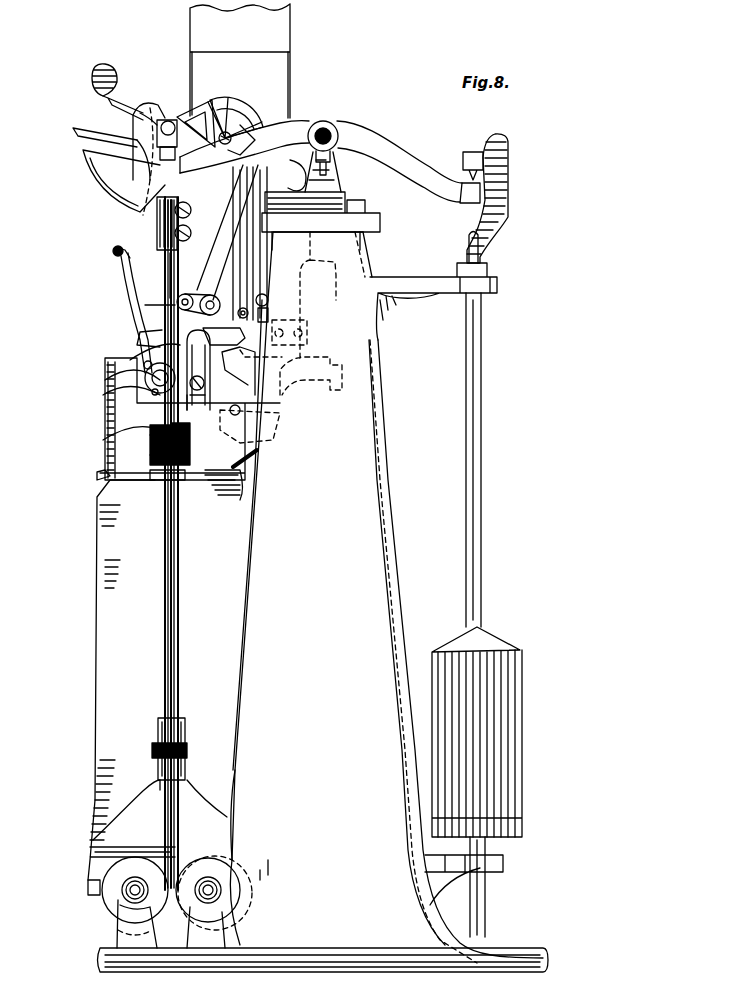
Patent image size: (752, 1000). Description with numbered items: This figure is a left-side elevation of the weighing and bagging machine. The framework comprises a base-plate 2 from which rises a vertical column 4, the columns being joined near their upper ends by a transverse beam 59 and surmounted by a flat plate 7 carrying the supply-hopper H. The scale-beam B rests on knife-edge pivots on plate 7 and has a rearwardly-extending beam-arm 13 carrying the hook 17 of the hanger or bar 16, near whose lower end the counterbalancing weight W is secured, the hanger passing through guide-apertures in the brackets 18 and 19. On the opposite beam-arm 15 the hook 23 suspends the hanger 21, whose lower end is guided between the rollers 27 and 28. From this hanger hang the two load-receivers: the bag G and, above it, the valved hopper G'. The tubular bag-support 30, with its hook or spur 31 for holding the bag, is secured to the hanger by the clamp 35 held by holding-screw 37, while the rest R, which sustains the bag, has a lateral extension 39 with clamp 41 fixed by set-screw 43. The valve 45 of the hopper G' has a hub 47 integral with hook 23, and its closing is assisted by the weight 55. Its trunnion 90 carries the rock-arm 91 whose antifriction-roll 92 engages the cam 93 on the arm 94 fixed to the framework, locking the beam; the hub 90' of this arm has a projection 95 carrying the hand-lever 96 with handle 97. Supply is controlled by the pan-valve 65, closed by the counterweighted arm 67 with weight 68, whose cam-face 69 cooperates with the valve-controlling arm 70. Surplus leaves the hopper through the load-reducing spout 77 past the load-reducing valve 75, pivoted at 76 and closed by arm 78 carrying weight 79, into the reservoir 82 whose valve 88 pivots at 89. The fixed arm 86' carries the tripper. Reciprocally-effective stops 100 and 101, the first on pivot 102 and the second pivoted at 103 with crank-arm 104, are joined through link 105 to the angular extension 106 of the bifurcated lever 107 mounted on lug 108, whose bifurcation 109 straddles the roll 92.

The supply-hopper H is at (200, 58).
The stop 101 is at (228, 110).
The scale-beam B is at (347, 134).
The link 105 is at (223, 207).
The beam-arm 13 is at (412, 172).
The hook 17 is at (507, 178).
The lug or bracket 18 is at (425, 283).
The hanger or bar 16 is at (481, 455).
The weight W is at (522, 722).
The lug or bracket 19 is at (504, 866).
The vertical column 4 is at (373, 597).
The base-plate 2 is at (520, 958).
The flat plate 7 is at (380, 225).
The fixed arm 86' is at (314, 247).
The transverse beam 59 is at (343, 375).
The pivot 103 is at (245, 107).
The stop 100 is at (193, 112).
The crank-arm 104 is at (247, 133).
The pivot 102 is at (163, 112).
The weight 68 is at (97, 70).
The counterweighted arm 67 is at (120, 110).
The cam-face 69 is at (140, 127).
The valve-controlling arm 70 is at (85, 138).
The pan-valve 65 is at (100, 160).
The hook 23 is at (140, 178).
The beam-arm 15 is at (140, 207).
The hub 47 is at (158, 208).
The pivot 89 is at (248, 210).
The load-reducing spout 77 is at (245, 245).
The angular extension 106 is at (185, 300).
The lug 108 is at (185, 300).
The valved hopper G' is at (91, 250).
The handle 97 is at (113, 256).
The hand-lever 96 is at (127, 277).
The bifurcated lever 107 is at (145, 308).
The closing device or weight 55 is at (203, 328).
The arm or bracket 94 is at (242, 312).
The weight 79 is at (266, 297).
The arm 78 is at (266, 314).
The pivot 76 is at (295, 320).
The load-reducing valve 75 is at (243, 348).
The rock-arm 91 is at (206, 395).
The reservoir 82 is at (250, 393).
The valve 88 is at (243, 413).
The antifriction-roll 92 is at (190, 405).
The bifurcation 109 is at (193, 407).
The bag-support 30 is at (110, 437).
The cam 93 is at (157, 342).
The projection 95 is at (157, 370).
The valve 45 is at (153, 377).
The hub 90' is at (112, 401).
The pin or trunnion 90 is at (139, 417).
The holding-screw 37 is at (157, 447).
The clamp 35 is at (155, 470).
The hook or spur 31 is at (98, 478).
The bag G is at (118, 680).
The rest R is at (90, 880).
The hanger or bar 21 is at (167, 623).
The clamp 41 is at (160, 732).
The set-screw 43 is at (152, 750).
The lateral extension 39 is at (138, 825).
The roller 27 is at (213, 867).
The roller 28 is at (112, 908).